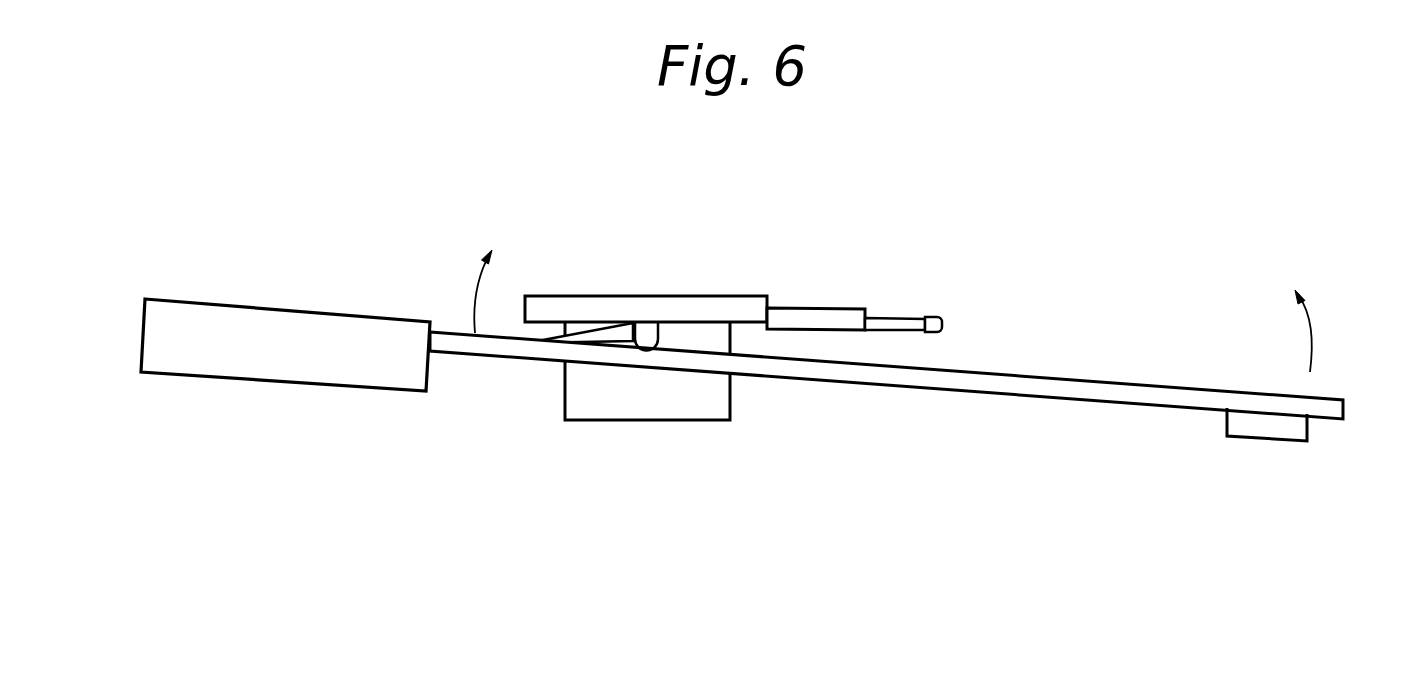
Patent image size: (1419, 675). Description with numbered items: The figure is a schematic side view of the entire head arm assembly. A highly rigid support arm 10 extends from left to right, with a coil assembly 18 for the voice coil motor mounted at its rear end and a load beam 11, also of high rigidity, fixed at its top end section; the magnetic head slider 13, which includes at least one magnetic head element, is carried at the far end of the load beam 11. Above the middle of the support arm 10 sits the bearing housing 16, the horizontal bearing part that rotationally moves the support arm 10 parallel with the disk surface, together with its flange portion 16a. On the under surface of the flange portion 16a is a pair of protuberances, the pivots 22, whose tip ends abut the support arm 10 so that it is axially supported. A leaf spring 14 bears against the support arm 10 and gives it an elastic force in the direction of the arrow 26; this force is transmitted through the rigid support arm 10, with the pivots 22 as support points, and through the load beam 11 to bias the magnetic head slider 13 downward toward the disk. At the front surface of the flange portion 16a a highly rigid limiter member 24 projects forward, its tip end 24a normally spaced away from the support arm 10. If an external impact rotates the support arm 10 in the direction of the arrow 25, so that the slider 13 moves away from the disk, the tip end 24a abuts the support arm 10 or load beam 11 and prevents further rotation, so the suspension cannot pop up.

The support arm 10 is at (875, 377).
The load beam 11 is at (1123, 393).
The magnetic head slider 13 is at (1265, 427).
The leaf spring 14 is at (552, 338).
The bearing housing 16 is at (578, 397).
The flange portion 16a is at (723, 307).
The coil assembly 18 is at (195, 362).
The pivots 22 is at (642, 335).
The limiter member 24 is at (845, 318).
The tip end 24a is at (938, 332).
The direction of the arrow 25 is at (1313, 333).
The direction shown by the arrow 26 is at (472, 297).